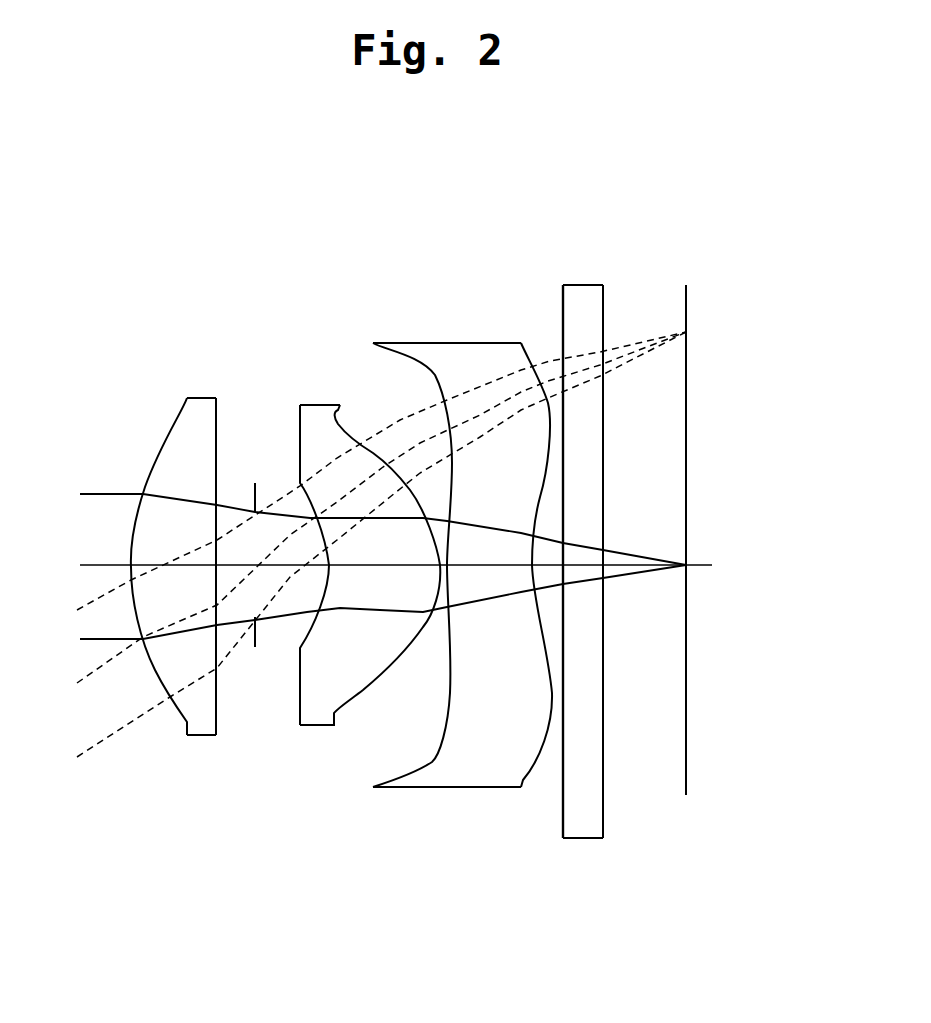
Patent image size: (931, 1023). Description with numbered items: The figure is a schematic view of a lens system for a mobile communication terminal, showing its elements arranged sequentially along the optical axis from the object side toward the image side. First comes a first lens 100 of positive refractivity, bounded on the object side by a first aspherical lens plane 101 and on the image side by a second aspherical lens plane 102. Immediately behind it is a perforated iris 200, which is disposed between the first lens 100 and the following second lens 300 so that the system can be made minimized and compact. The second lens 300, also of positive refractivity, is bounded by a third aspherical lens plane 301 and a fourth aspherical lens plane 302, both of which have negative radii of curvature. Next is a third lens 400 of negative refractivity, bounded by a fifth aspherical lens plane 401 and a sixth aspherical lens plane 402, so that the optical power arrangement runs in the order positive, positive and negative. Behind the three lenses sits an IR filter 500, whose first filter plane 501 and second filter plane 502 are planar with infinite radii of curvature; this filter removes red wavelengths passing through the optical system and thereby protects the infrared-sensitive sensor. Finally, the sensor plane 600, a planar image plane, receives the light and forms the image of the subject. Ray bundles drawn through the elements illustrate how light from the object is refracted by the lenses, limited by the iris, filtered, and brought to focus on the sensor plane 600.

The first lens 100 is at (154, 560).
The first aspherical lens plane 101 is at (187, 391).
The second aspherical lens plane 102 is at (216, 391).
The perforated iris 200 is at (259, 485).
The second lens 300 is at (339, 552).
The third aspherical lens plane 301 is at (300, 398).
The fourth aspherical lens plane 302 is at (340, 398).
The third lens 400 is at (461, 556).
The fifth aspherical lens plane 401 is at (373, 336).
The sixth aspherical lens plane 402 is at (521, 336).
The IR filter 500 is at (574, 553).
The first filter plane 501 is at (562, 278).
The second filter plane 502 is at (603, 278).
The sensor plane 600 is at (686, 296).